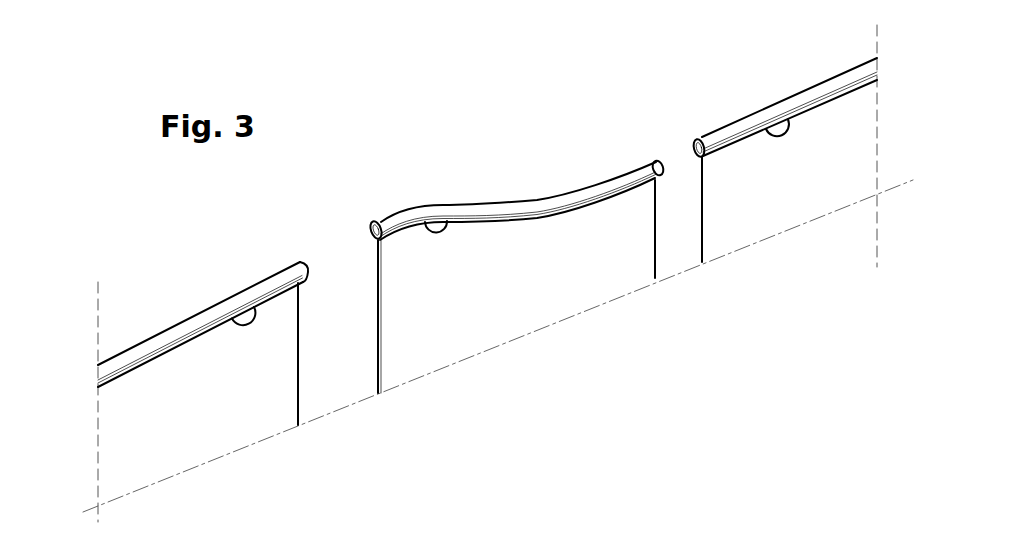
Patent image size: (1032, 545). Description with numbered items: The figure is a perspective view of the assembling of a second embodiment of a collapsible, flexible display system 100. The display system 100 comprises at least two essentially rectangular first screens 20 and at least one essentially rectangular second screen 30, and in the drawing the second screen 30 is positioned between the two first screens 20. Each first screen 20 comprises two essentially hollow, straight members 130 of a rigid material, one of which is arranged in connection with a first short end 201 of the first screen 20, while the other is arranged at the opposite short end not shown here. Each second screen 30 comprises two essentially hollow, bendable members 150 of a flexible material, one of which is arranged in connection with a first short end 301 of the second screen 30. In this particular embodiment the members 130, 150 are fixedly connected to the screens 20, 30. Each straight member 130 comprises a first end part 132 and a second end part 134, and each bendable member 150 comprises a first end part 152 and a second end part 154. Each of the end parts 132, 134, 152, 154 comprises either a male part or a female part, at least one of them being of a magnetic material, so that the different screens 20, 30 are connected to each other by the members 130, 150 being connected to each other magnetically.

The collapsible, flexible display system 100 is at (441, 133).
The first screen 20 is at (199, 412).
The second screen 30 is at (529, 287).
The straight member 130 is at (175, 323).
The first end part 132 is at (700, 133).
The second end part 134 is at (293, 262).
The bendable member 150 is at (555, 195).
The first end part 152 is at (378, 220).
The second end part 154 is at (650, 157).
The first short end 201 is at (232, 313).
The first short end 301 is at (445, 221).